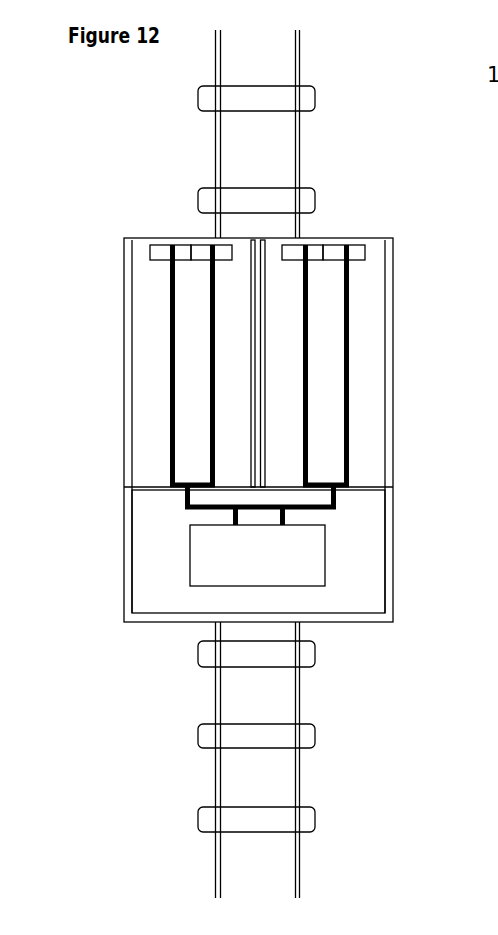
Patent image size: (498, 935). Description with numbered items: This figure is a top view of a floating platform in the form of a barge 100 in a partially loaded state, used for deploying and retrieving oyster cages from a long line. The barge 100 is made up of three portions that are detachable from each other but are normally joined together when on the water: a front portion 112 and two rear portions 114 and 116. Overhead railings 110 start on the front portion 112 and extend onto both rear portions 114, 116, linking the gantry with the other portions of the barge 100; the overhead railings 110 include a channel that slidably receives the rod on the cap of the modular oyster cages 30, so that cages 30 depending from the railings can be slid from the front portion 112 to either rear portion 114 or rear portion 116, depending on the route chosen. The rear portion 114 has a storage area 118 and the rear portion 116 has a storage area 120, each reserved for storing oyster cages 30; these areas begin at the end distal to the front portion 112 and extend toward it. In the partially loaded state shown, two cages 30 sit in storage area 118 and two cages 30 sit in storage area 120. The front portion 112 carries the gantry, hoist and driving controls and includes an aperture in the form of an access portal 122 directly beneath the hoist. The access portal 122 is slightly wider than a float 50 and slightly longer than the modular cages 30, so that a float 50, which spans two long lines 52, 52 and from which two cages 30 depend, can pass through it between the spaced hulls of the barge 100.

The barge 100 is at (98, 175).
The modular oyster cage 30 is at (285, 243).
The rear portion 116 is at (375, 235).
The rear portion 114 is at (118, 327).
The overhead railings 110 is at (345, 347).
The storage area 118 is at (149, 372).
The storage area 120 is at (367, 398).
The front portion 112 is at (120, 618).
The access portal 122 is at (302, 553).
The float 50 is at (242, 733).
The long line 52 is at (295, 861).